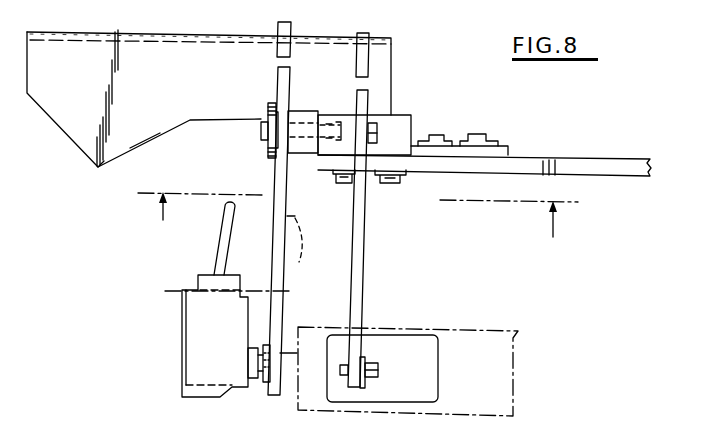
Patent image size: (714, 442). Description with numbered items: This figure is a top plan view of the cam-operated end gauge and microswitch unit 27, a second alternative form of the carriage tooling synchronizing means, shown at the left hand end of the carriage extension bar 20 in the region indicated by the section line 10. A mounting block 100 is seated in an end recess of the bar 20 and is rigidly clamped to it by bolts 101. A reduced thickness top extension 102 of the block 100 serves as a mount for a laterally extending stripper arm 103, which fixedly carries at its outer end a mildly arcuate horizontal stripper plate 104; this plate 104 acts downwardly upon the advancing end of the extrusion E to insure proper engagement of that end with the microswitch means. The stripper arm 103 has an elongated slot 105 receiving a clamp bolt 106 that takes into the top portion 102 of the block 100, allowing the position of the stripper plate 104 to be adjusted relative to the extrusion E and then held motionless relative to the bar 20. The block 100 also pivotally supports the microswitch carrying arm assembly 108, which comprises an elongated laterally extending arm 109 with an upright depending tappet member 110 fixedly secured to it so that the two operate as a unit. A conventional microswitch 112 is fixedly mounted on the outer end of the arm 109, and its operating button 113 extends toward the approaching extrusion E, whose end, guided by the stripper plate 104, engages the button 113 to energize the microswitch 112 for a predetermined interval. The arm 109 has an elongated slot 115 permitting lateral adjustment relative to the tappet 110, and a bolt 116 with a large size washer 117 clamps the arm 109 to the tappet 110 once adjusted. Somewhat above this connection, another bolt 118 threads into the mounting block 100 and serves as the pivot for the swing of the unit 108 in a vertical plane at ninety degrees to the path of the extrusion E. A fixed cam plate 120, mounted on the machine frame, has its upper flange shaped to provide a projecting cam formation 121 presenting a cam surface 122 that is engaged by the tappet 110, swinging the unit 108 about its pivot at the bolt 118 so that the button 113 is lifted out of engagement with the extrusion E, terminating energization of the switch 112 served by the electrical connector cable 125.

The section line 10 is at (361, 214).
The carriage extension bar 20 is at (633, 149).
The second alternative embodiment of the carriage tooling synchronizing means 27 is at (174, 336).
The mounting block 100 is at (403, 130).
The bolts 101 is at (392, 180).
The reduced thickness top extension 102 is at (347, 125).
The stripper arm 103 is at (355, 283).
The stripper plate 104 is at (407, 347).
The elongated slot 105 is at (370, 213).
The clamp bolt 106 is at (373, 132).
The microswitch carrying arm assembly 108 is at (266, 187).
The arm 109 is at (273, 248).
The tappet member 110 is at (301, 148).
The microswitch 112 is at (208, 359).
The operating button 113 is at (293, 372).
The elongated slot 115 is at (300, 256).
The bolt 116 is at (256, 126).
The large size washer 117 is at (263, 141).
The bolt 118 is at (282, 128).
The cam plate 120 is at (72, 119).
The cam formation 121 is at (100, 165).
The cam surface 122 is at (137, 145).
The electrical connector cable 125 is at (226, 226).
The extrusion E is at (485, 328).